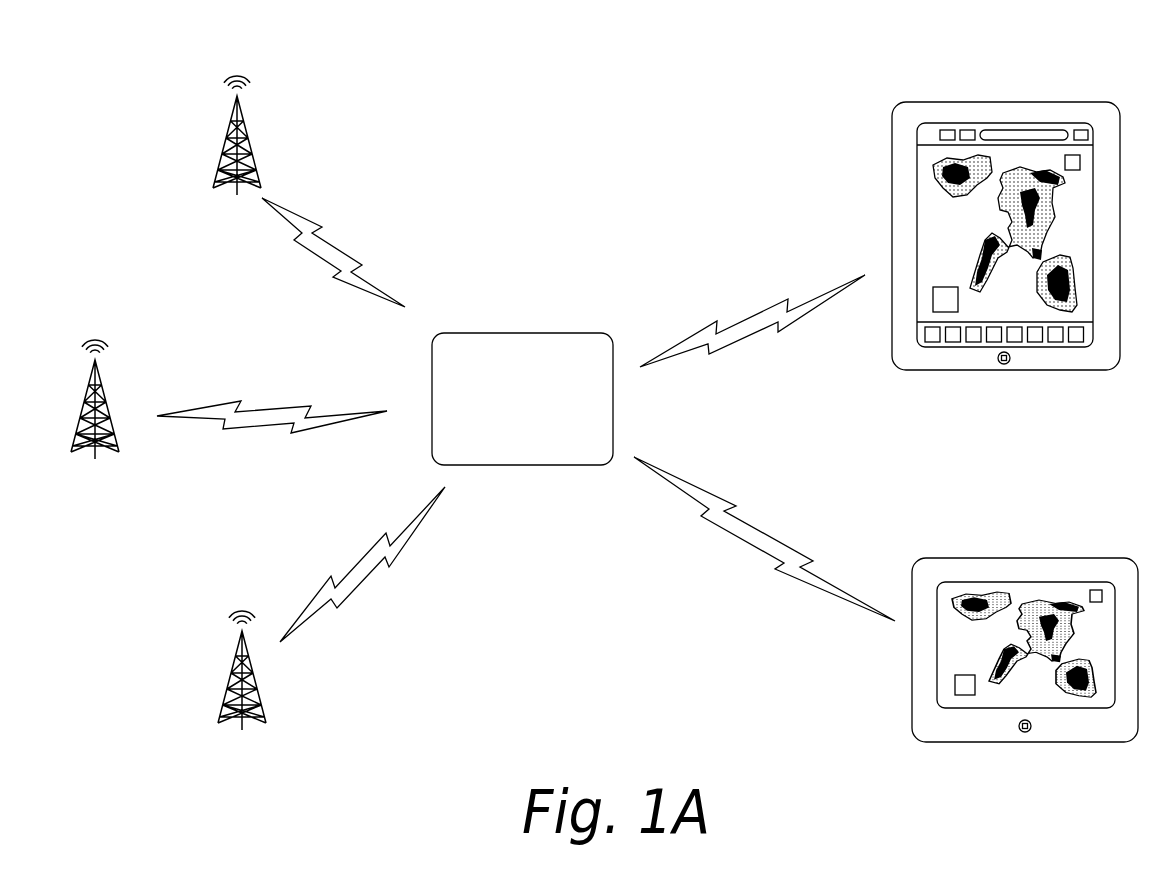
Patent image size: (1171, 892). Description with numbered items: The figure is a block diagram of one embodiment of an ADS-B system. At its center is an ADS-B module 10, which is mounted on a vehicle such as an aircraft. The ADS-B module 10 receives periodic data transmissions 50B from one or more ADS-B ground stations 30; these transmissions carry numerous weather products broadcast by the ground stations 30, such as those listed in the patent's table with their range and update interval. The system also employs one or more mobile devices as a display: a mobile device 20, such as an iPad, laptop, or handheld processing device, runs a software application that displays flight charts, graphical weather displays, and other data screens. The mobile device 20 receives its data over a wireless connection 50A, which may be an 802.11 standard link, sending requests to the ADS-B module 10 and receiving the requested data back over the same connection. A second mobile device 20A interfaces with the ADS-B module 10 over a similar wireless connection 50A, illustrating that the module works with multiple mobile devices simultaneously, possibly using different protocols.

The ADS-B module 10 is at (537, 347).
The mobile device 20 is at (970, 112).
The second mobile device 20A is at (988, 567).
The ADS-B ground station 30 is at (257, 128).
The wireless connection 50A is at (762, 320).
The data transmissions 50B is at (337, 252).